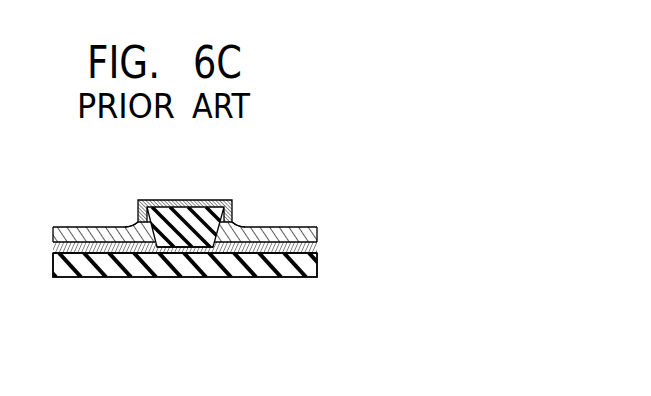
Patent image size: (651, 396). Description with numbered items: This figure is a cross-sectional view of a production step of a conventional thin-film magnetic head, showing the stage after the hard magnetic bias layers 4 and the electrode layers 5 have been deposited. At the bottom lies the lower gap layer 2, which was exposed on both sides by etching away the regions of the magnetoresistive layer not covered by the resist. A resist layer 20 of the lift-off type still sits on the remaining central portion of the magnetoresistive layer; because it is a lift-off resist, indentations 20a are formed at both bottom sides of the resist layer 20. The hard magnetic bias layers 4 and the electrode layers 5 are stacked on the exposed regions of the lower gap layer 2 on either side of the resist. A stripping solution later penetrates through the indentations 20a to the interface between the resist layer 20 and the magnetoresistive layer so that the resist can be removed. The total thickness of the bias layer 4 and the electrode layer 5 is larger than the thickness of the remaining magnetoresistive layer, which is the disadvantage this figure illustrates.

The lower gap layer 2 is at (317, 266).
The hard magnetic bias layer 4 is at (53, 249).
The electrode layer 5 is at (53, 233).
The resist layer 20 is at (190, 210).
The indentations 20a is at (128, 226).